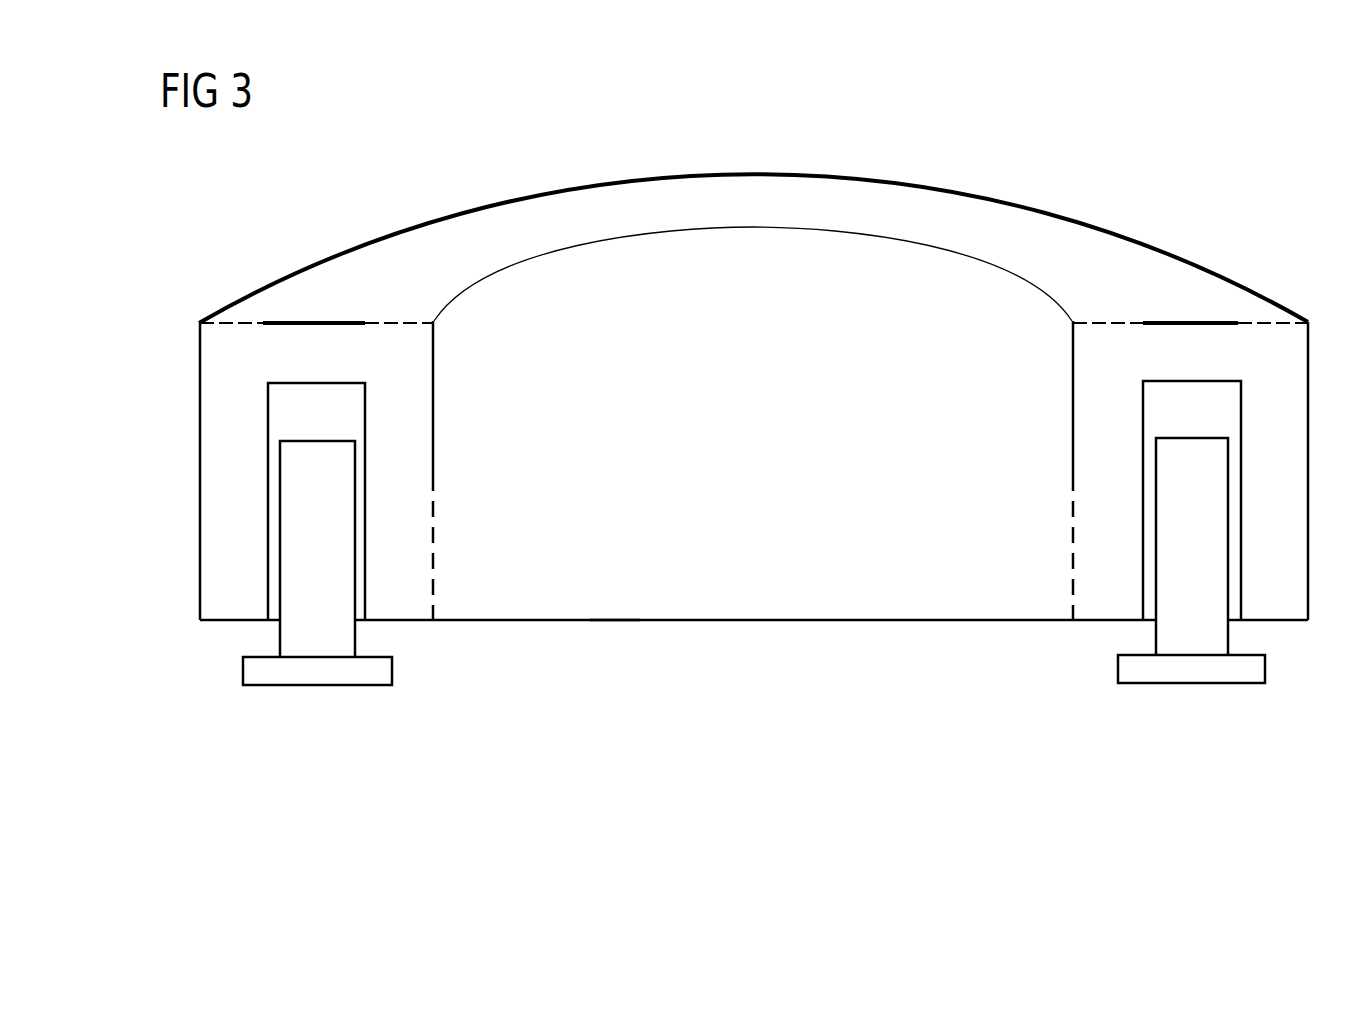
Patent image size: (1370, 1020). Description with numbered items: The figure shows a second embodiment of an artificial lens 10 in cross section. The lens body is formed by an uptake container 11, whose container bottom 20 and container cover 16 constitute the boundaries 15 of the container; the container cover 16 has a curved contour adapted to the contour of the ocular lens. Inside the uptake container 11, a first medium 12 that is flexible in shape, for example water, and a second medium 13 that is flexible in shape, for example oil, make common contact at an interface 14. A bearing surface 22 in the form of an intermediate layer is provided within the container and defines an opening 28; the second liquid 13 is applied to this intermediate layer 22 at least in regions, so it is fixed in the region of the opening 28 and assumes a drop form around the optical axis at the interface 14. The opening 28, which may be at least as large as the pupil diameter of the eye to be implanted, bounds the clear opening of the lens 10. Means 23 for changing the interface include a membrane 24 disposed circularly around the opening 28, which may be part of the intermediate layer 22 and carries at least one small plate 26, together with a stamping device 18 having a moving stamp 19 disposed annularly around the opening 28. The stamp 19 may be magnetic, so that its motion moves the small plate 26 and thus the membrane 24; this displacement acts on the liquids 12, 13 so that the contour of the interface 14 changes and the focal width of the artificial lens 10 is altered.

The artificial lens 10 is at (252, 240).
The uptake container 11 is at (196, 359).
The first medium 12 is at (443, 228).
The second medium 13 is at (725, 608).
The interface 14 is at (755, 232).
The boundaries 15 is at (729, 168).
The container cover 16 is at (844, 178).
The stamping device 18 is at (263, 501).
The stamp 19 is at (290, 558).
The container bottom 20 is at (618, 622).
The bearing surface 22 is at (219, 333).
The means for changing the interface 23 is at (1298, 477).
The membrane 24 is at (411, 327).
The small plate 26 is at (335, 320).
The opening 28 is at (869, 338).